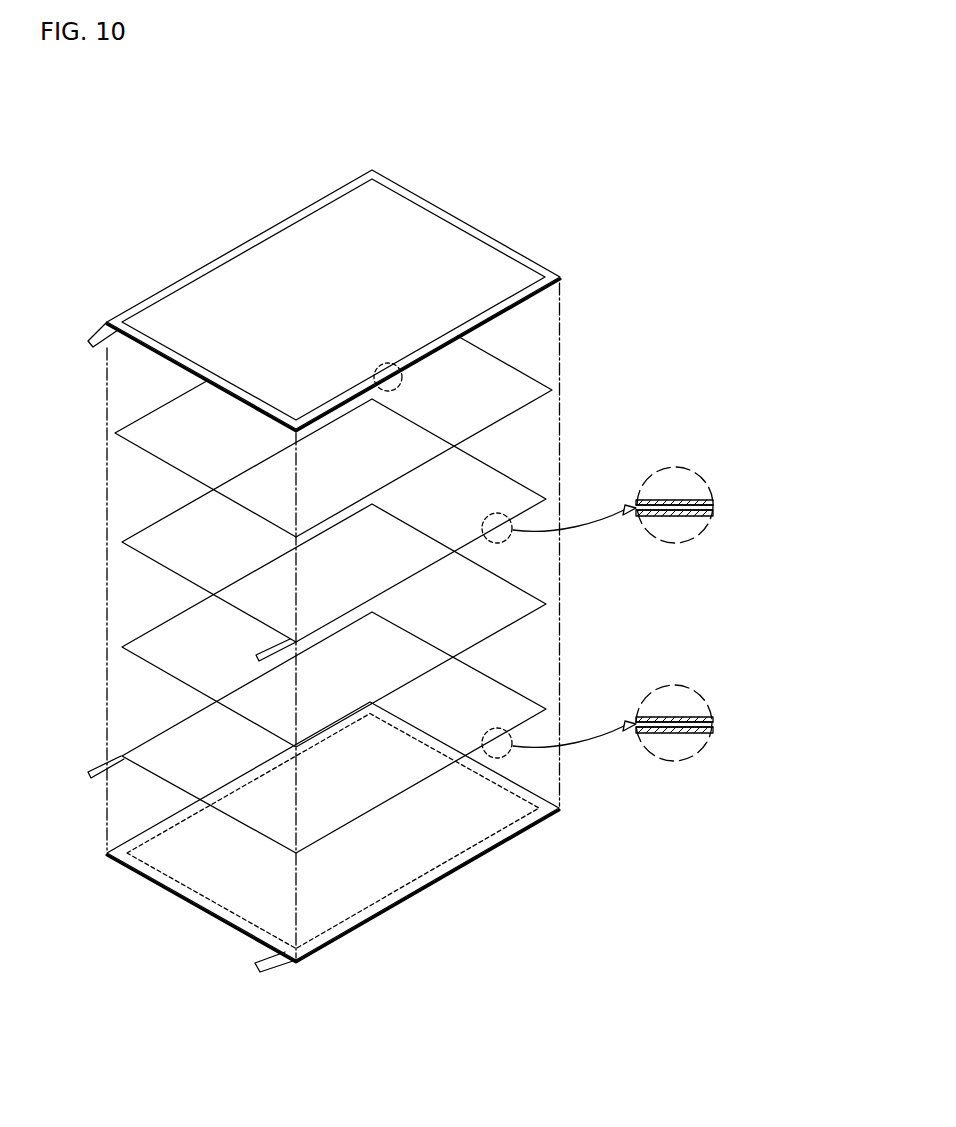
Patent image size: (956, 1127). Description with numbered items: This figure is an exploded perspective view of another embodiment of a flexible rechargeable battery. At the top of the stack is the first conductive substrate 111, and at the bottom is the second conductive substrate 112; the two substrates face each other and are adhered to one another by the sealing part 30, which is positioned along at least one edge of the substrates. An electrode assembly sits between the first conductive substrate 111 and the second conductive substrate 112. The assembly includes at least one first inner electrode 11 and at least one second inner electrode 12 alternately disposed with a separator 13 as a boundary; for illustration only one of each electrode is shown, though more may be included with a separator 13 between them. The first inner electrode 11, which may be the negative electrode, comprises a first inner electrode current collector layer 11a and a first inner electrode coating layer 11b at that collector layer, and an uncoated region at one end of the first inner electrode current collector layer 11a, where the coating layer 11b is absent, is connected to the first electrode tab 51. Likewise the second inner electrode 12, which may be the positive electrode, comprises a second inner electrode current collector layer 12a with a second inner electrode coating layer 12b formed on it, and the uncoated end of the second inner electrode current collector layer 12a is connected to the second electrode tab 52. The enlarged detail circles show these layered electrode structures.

The first conductive substrate 111 is at (552, 251).
The second conductive substrate 112 is at (579, 830).
The separator 13 is at (550, 364).
The second inner electrode 12 is at (548, 473).
The second inner electrode current collector layer 12a is at (667, 507).
The second inner electrode coating layer 12b is at (700, 500).
The first inner electrode 11 is at (548, 691).
The first inner electrode current collector layer 11a is at (667, 724).
The first inner electrode coating layer 11b is at (700, 717).
The first electrode tab 51 is at (88, 340).
The second electrode tab 52 is at (256, 658).
The sealing part 30 is at (487, 844).